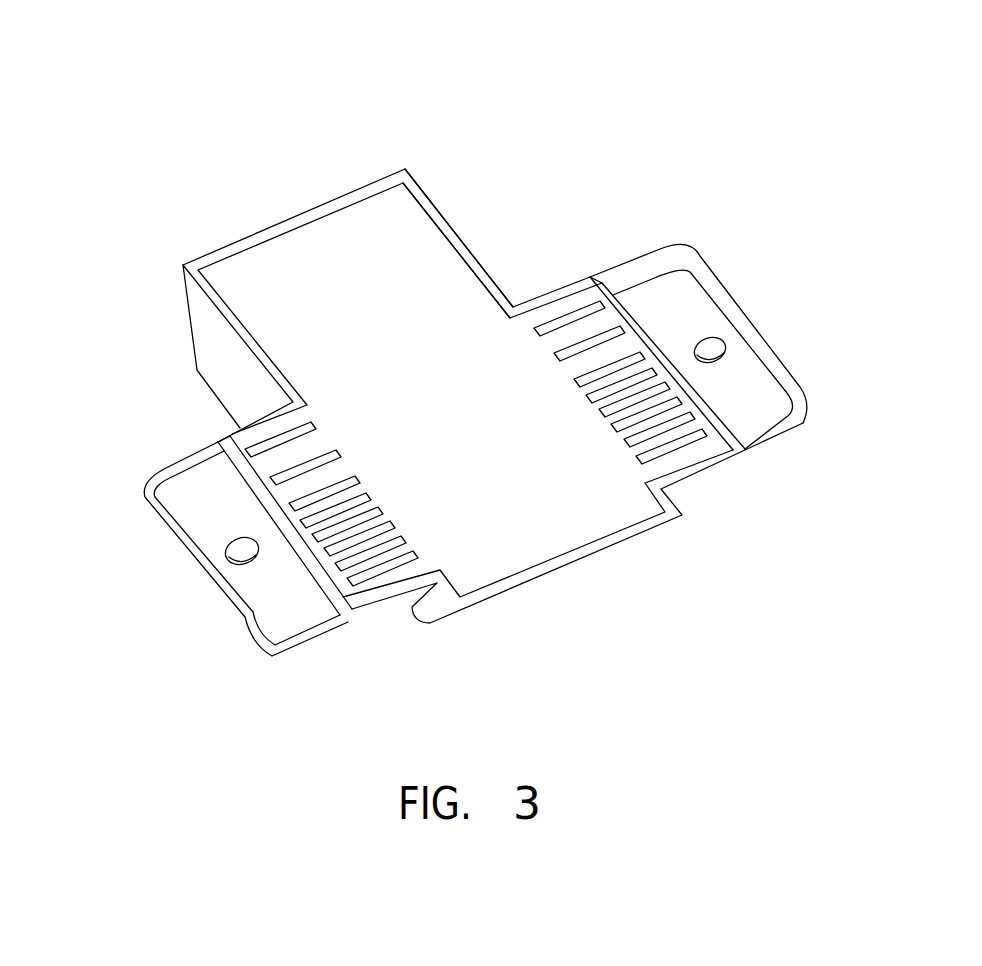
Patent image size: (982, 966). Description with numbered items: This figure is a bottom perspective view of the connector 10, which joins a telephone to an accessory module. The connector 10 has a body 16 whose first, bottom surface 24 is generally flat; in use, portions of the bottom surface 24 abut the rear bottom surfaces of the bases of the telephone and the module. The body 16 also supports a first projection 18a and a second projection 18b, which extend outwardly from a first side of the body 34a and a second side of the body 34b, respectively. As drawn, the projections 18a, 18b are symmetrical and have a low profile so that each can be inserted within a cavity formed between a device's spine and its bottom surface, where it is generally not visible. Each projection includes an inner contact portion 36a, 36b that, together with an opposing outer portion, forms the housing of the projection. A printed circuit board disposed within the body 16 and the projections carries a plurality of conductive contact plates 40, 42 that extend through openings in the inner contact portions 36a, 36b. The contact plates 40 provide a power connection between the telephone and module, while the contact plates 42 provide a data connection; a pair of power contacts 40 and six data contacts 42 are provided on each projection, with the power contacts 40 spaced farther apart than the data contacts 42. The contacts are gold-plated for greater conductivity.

The connector 10 is at (573, 138).
The body 16 is at (418, 193).
The bottom surface 24 is at (415, 366).
The first side of the body 34a is at (203, 333).
The second side of the body 34b is at (474, 252).
The inner contact portion 36a is at (270, 467).
The inner contact portion 36b is at (615, 325).
The first projection 18a is at (178, 562).
The second projection 18b is at (780, 352).
The power contact plates 40 is at (622, 347).
The data contact plates 42 is at (393, 557).